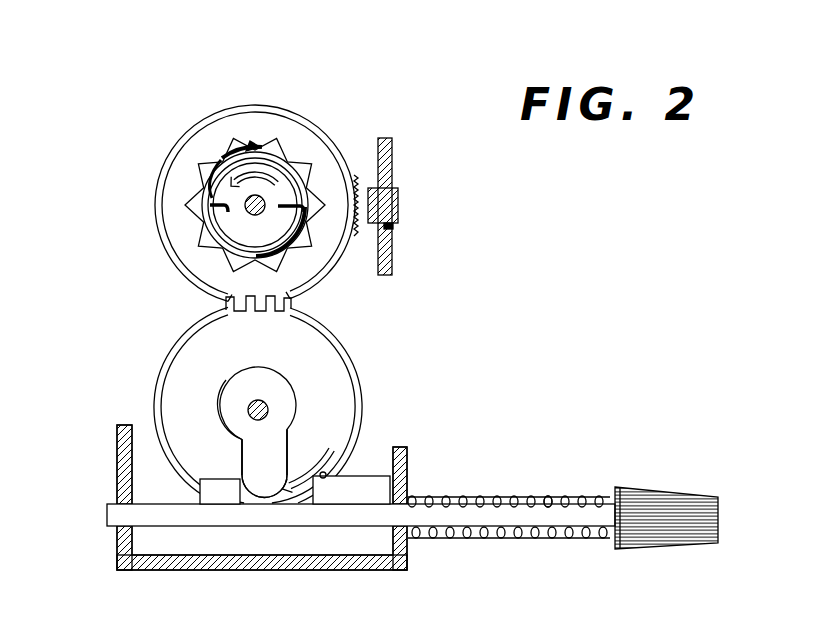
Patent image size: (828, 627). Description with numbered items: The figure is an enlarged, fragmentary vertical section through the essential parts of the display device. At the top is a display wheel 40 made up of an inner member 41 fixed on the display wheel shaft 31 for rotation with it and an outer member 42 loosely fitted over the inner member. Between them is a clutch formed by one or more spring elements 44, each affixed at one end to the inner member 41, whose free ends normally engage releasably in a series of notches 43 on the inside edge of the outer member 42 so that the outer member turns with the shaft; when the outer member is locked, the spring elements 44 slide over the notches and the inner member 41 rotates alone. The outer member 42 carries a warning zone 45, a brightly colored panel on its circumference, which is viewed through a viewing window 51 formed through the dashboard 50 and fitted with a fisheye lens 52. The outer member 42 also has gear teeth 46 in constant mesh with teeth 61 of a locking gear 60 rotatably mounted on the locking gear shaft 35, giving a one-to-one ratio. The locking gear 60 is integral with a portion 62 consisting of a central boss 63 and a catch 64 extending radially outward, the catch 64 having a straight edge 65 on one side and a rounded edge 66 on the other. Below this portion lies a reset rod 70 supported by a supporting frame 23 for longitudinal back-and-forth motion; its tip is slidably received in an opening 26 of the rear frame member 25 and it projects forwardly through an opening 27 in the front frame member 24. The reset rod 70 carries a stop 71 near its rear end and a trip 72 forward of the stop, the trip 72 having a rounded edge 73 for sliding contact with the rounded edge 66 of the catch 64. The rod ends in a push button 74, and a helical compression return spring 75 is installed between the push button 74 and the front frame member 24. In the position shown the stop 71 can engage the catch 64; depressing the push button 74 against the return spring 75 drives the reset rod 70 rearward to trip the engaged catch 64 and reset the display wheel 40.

The supporting frame 23 is at (383, 570).
The front frame member 24 is at (408, 463).
The rear frame member 25 is at (120, 450).
The opening 26 is at (120, 497).
The opening 27 is at (410, 535).
The display wheel shaft 31 is at (263, 200).
The locking gear shaft 35 is at (263, 407).
The display wheel 40 is at (273, 120).
The inner member 41 is at (222, 220).
The outer member 42 is at (208, 137).
The notches 43 is at (200, 173).
The spring element 44 is at (242, 147).
The warning zone 45 is at (357, 180).
The gear teeth 46 is at (330, 273).
The dashboard 50 is at (390, 175).
The viewing window 51 is at (398, 218).
The fisheye lens 52 is at (398, 203).
The locking gear 60 is at (213, 342).
The teeth 61 is at (355, 377).
The portion 62 is at (250, 383).
The boss 63 is at (233, 393).
The catch 64 is at (258, 473).
The straight edge 65 is at (240, 463).
The rounded edge 66 is at (288, 453).
The reset rod 70 is at (547, 520).
The stop 71 is at (215, 500).
The trip 72 is at (362, 478).
The rounded edge 73 is at (324, 478).
The push button 74 is at (625, 543).
The return spring 75 is at (548, 498).